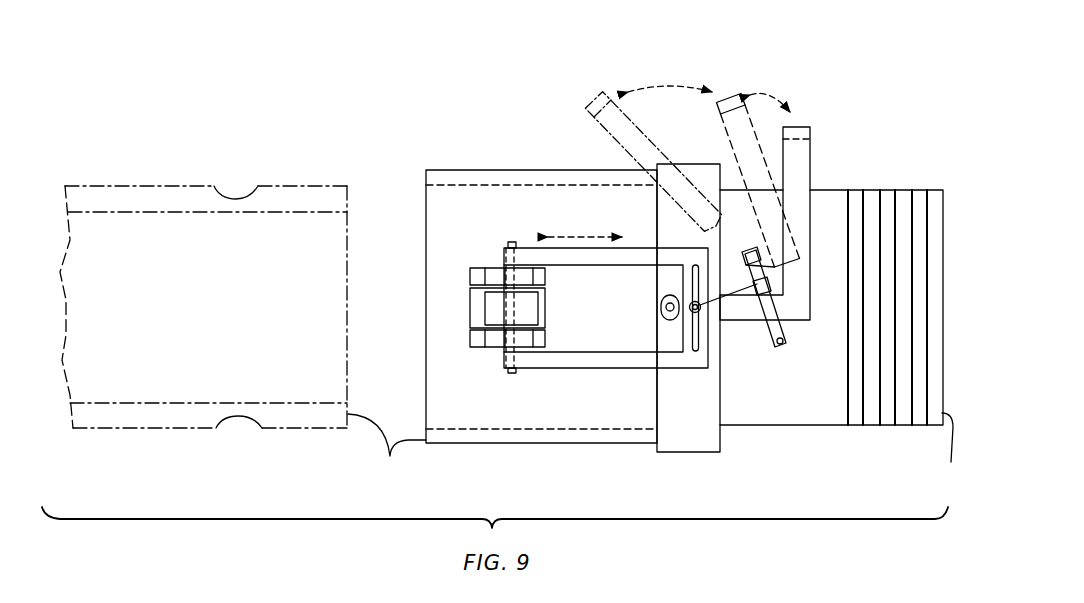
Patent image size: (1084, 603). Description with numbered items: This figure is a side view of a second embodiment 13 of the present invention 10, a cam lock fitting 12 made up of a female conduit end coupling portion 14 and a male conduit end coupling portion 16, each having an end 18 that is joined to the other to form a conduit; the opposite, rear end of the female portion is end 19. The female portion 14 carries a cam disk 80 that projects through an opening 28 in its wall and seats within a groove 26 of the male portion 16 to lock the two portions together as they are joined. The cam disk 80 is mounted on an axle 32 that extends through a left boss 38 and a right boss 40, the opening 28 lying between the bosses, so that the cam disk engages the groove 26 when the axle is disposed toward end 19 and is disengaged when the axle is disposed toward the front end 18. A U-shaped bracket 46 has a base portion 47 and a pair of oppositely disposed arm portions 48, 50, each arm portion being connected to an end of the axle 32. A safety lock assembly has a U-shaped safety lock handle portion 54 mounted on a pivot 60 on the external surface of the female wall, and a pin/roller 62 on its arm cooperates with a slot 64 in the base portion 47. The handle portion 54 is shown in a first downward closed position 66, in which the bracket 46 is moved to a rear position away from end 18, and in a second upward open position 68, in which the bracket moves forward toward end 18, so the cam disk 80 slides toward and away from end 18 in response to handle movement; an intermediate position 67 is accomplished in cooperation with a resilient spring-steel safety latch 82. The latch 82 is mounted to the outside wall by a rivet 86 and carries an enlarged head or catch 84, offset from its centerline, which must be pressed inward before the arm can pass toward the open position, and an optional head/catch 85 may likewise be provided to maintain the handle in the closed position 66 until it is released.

The present invention 10 is at (893, 156).
The cam lock fitting 12 is at (422, 161).
The second embodiment 13 is at (866, 80).
The female conduit end coupling portion 14 is at (552, 166).
The male conduit end coupling portion 16 is at (148, 178).
The end 18 is at (387, 452).
The end of female conduit 19 is at (948, 451).
The groove 26 is at (237, 197).
The opening 28 is at (470, 298).
The axle 32 is at (511, 242).
The left boss 38 is at (470, 336).
The right boss 40 is at (470, 277).
The U-shaped bracket 46 is at (714, 327).
The base portion 47 is at (700, 356).
The arm portion 48 is at (594, 372).
The arm portion 50 is at (590, 262).
The safety lock handle portion 54 is at (797, 161).
The pivot 60 is at (666, 307).
The pin/roller 62 is at (693, 313).
The slot 64 is at (697, 333).
The first downward closed position 66 is at (796, 126).
The intermediate position 67 is at (727, 103).
The second upward open position 68 is at (596, 103).
The cam disk 80 is at (487, 307).
The safety latch 82 is at (783, 327).
The head or catch 84 is at (751, 264).
The head/catch 85 is at (768, 292).
The rivet 86 is at (781, 346).